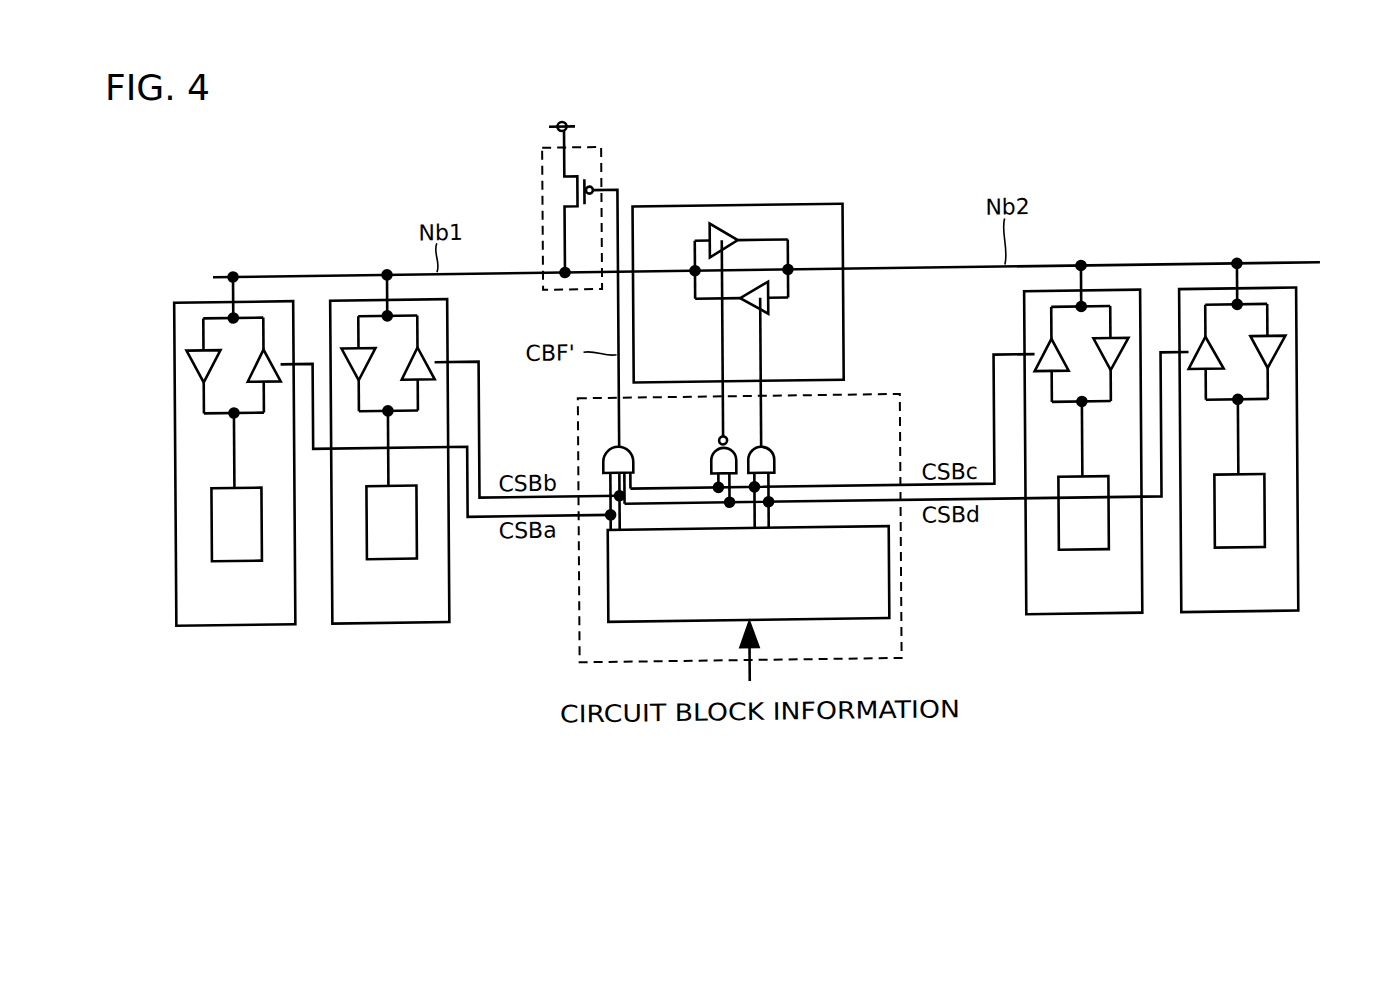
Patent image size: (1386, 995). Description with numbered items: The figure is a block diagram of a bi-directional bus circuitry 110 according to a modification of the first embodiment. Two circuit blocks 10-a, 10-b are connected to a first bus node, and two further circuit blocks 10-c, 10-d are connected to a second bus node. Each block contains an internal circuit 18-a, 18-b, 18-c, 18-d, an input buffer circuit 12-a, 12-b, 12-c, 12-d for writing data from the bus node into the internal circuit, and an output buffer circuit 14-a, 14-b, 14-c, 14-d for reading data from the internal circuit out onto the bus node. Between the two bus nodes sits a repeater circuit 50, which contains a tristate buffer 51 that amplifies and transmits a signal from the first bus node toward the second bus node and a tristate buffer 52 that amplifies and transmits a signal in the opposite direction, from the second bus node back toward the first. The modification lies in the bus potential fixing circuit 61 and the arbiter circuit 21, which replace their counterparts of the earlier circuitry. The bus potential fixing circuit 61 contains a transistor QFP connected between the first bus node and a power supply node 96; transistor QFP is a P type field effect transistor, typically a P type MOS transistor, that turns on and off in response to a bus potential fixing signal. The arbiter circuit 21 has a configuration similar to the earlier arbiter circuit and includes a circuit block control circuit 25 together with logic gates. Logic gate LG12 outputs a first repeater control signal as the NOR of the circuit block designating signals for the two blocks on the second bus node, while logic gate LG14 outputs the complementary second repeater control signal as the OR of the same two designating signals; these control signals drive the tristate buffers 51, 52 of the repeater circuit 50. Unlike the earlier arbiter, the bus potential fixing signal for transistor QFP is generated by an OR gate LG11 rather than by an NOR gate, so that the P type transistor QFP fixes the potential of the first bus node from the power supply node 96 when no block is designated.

The bi-directional bus circuitry 110 is at (1203, 204).
The circuit block 10-a is at (199, 478).
The circuit block 10-b is at (410, 458).
The circuit block 10-c is at (1059, 446).
The circuit block 10-d is at (1275, 461).
The input buffer circuit 12-a is at (190, 366).
The input buffer circuit 12-b is at (352, 350).
The input buffer circuit 12-c is at (1046, 366).
The input buffer circuit 12-d is at (1210, 362).
The output buffer circuit 14-a is at (262, 357).
The output buffer circuit 14-b is at (422, 362).
The output buffer circuit 14-c is at (1117, 352).
The output buffer circuit 14-d is at (1272, 374).
The internal circuit 18-a is at (233, 561).
The internal circuit 18-b is at (387, 561).
The internal circuit 18-c is at (1081, 561).
The internal circuit 18-d is at (1237, 561).
The arbiter circuit 21 is at (777, 527).
The circuit block control circuit 25 is at (887, 590).
The repeater circuit 50 is at (738, 263).
The tristate buffer 51 is at (738, 236).
The tristate buffer 52 is at (770, 313).
The bus potential fixing circuit 61 is at (575, 210).
The power supply node 96 is at (569, 139).
The transistor QFP is at (565, 192).
The OR gate LG11 is at (633, 460).
The logic gate LG12 is at (716, 446).
The logic gate LG14 is at (775, 465).